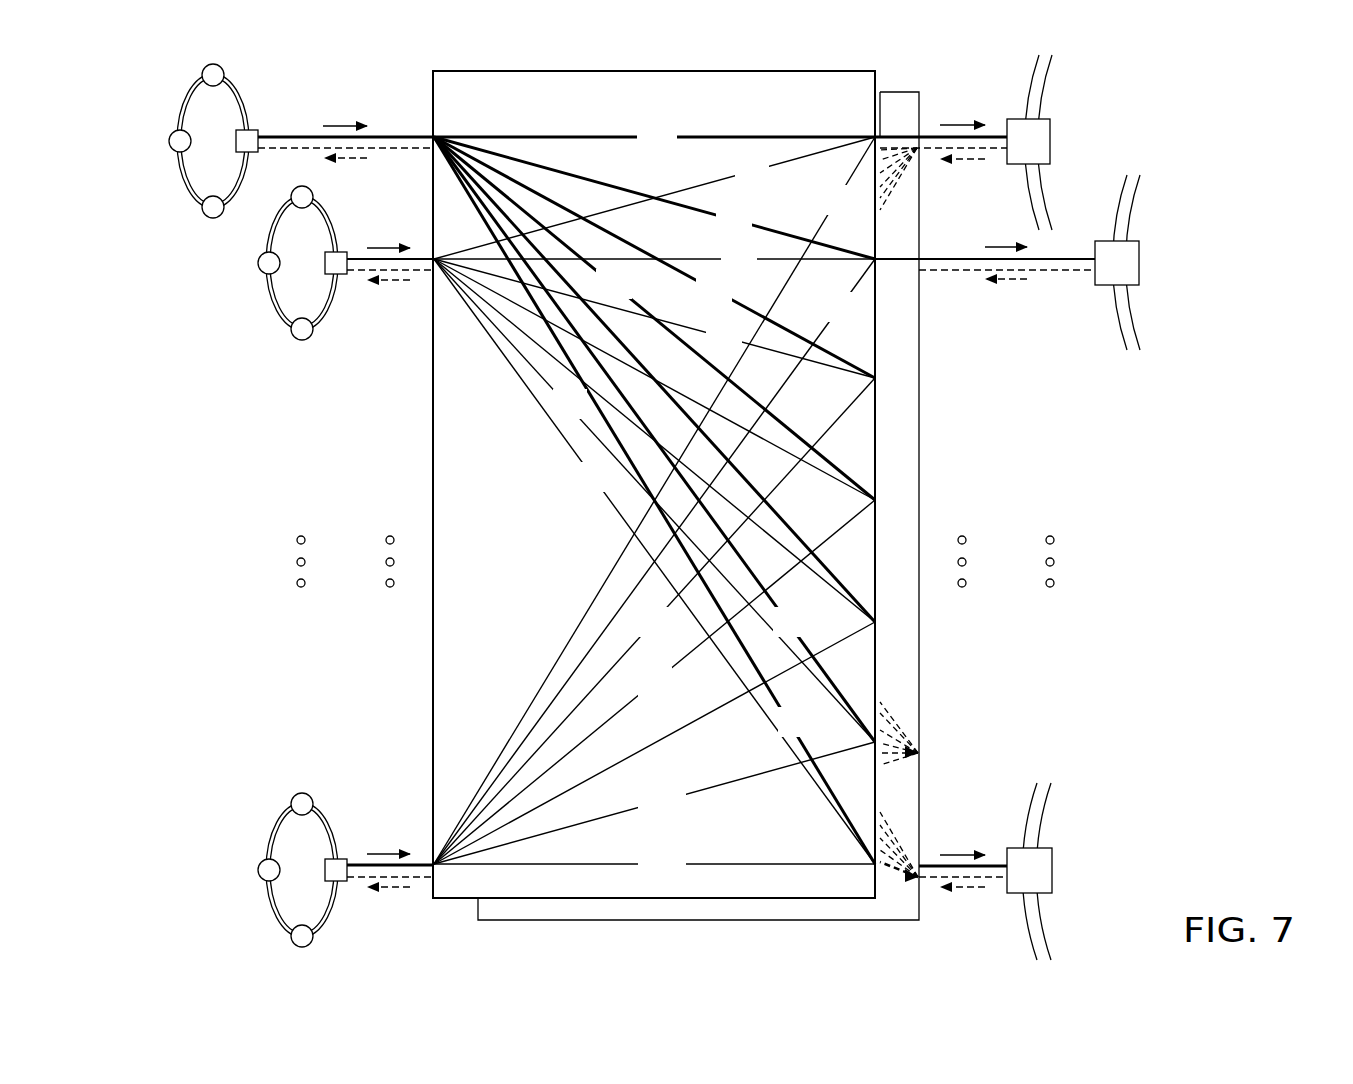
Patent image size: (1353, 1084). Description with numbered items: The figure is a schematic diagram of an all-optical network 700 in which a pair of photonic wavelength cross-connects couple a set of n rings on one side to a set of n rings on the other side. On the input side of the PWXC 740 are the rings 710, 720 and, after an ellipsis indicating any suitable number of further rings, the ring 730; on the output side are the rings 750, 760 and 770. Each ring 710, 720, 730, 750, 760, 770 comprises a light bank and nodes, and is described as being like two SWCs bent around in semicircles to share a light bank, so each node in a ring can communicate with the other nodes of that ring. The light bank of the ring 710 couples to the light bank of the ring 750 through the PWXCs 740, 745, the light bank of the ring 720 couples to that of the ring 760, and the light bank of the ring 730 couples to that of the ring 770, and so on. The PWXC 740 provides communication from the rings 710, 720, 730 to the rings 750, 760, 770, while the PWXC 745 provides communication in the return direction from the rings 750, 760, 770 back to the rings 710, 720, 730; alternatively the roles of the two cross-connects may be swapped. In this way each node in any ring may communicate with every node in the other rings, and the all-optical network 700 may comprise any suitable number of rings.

The all-optical network 700 is at (702, 501).
The ring 710 is at (168, 141).
The ring 720 is at (257, 263).
The ring 730 is at (258, 871).
The PWXC 740 is at (431, 445).
The PWXC 745 is at (921, 668).
The ring 750 is at (1052, 141).
The ring 760 is at (1140, 262).
The ring 770 is at (1053, 871).